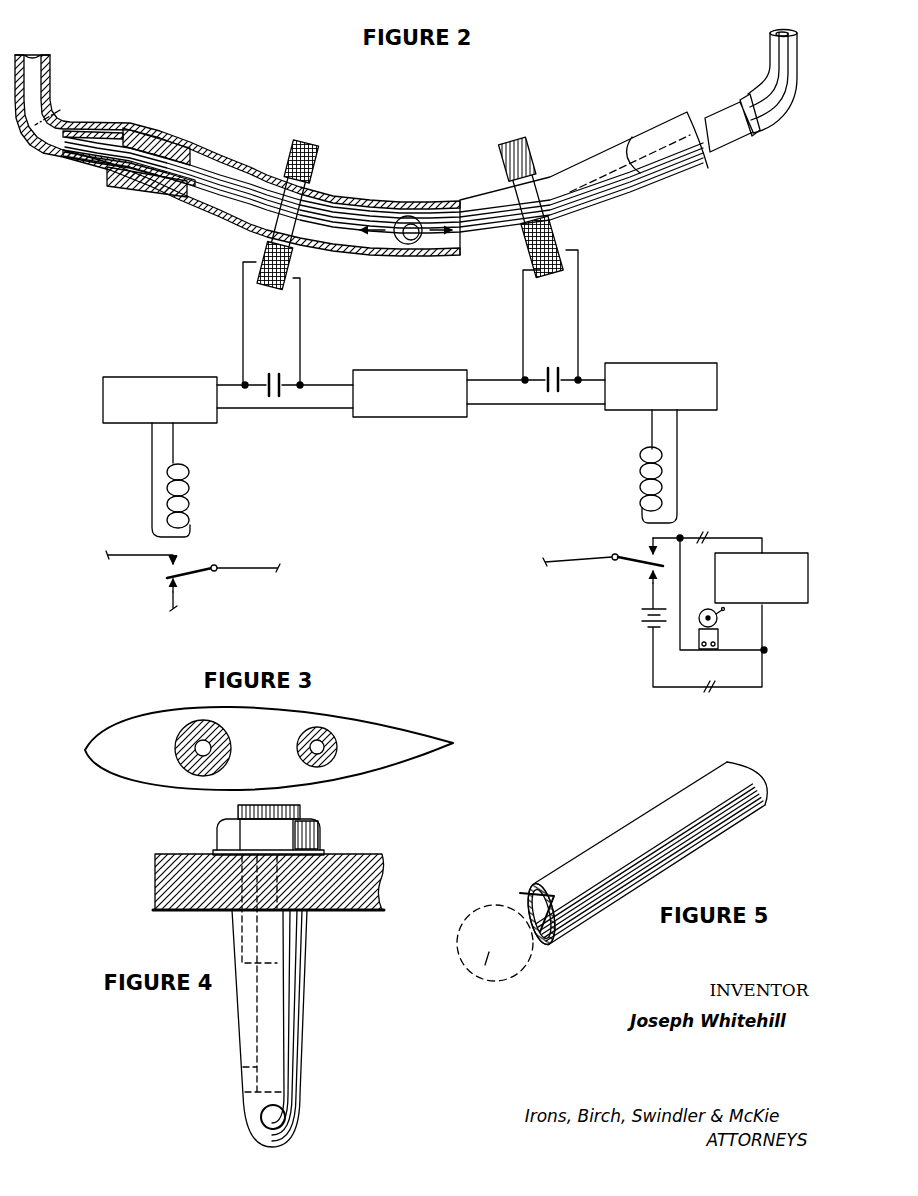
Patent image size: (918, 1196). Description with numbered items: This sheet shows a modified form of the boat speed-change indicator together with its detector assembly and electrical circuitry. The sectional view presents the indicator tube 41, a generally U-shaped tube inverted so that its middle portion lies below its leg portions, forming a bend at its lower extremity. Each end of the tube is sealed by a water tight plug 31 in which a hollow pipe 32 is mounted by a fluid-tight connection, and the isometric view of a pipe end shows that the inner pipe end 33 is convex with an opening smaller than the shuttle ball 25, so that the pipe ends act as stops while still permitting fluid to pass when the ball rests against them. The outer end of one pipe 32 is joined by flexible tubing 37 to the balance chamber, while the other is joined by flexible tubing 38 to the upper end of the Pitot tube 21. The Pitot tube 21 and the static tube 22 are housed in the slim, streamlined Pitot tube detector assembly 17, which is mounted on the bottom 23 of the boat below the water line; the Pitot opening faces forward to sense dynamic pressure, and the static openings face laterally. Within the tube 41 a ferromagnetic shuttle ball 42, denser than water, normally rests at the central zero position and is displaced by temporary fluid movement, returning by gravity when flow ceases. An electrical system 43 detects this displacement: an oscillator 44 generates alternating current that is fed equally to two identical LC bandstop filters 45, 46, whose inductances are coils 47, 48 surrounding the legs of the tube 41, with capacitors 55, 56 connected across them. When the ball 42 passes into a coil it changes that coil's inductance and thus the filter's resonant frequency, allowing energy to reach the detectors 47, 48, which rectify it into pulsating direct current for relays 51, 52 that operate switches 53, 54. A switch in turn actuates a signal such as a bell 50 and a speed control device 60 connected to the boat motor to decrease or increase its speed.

In FIG. 3, the Pitot tube detector assembly 17 is at (143, 714).
In FIG. 4, the Pitot tube detector assembly 17 is at (310, 990).
In FIG. 3, the Pitot tube 21 is at (323, 730).
In FIG. 4, the Pitot tube 21 is at (262, 1118).
In FIG. 3, the static tube 22 is at (202, 757).
In FIG. 4, the static tube 22 is at (258, 1023).
In FIG. 4, the bottom of boat 23 is at (168, 877).
In FIG. 5, the shuttle ball 25 is at (483, 978).
In FIG. 2, the water tight plug 31 is at (147, 133).
In FIG. 2, the hollow pipe 32 is at (97, 133).
In FIG. 5, the hollow pipe 32 is at (597, 857).
In FIG. 2, the inner pipe end 33 is at (213, 160).
In FIG. 5, the inner pipe end 33 is at (537, 943).
In FIG. 2, the flexible tubing 37 is at (50, 70).
In FIG. 2, the flexible tubing 38 is at (773, 60).
In FIG. 2, the indicator tube 41 is at (347, 200).
In FIG. 2, the shuttle ball 42 is at (416, 245).
In FIG. 2, the electrical system 43 is at (596, 350).
In FIG. 2, the oscillator 44 is at (405, 417).
In FIG. 2, the LC bandstop filter 45 is at (241, 311).
In FIG. 2, the LC bandstop filter 46 is at (521, 321).
In FIG. 2, the coil and detector 47 is at (305, 145).
In FIG. 2, the coil and detector 48 is at (513, 143).
In FIG. 2, the bell 50 is at (718, 636).
In FIG. 2, the relay 51 is at (188, 490).
In FIG. 2, the relay 52 is at (641, 482).
In FIG. 2, the switch 53 is at (190, 573).
In FIG. 2, the switch 54 is at (633, 553).
In FIG. 2, the capacitor 55 is at (283, 397).
In FIG. 2, the capacitor 56 is at (546, 392).
In FIG. 2, the speed control device 60 is at (780, 553).